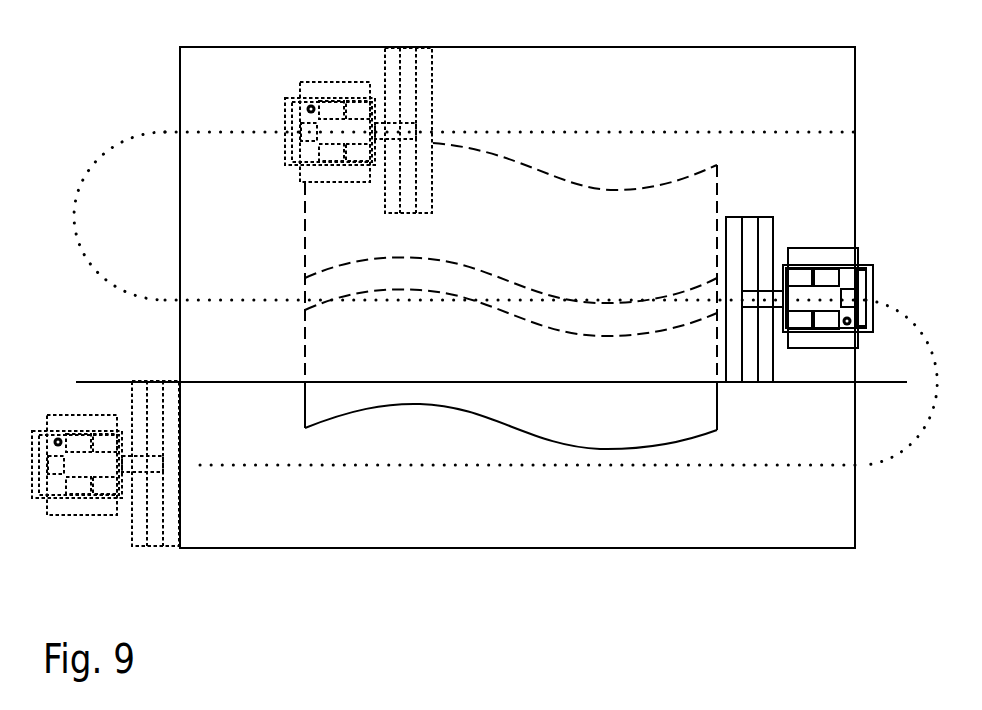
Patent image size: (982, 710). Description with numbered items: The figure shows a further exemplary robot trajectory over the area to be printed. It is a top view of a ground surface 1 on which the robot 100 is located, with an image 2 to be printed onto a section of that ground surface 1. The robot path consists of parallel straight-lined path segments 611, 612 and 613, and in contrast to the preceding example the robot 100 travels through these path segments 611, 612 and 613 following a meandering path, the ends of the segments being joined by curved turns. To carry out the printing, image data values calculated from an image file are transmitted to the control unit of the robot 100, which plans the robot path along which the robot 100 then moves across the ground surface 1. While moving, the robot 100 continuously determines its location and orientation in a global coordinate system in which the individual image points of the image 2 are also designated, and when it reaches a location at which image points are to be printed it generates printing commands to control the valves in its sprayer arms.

The ground surface 1 is at (517, 548).
The image 2 is at (617, 455).
The robot 100 is at (892, 253).
The path segment 611 is at (405, 465).
The path segment 612 is at (210, 300).
The path segment 613 is at (747, 132).